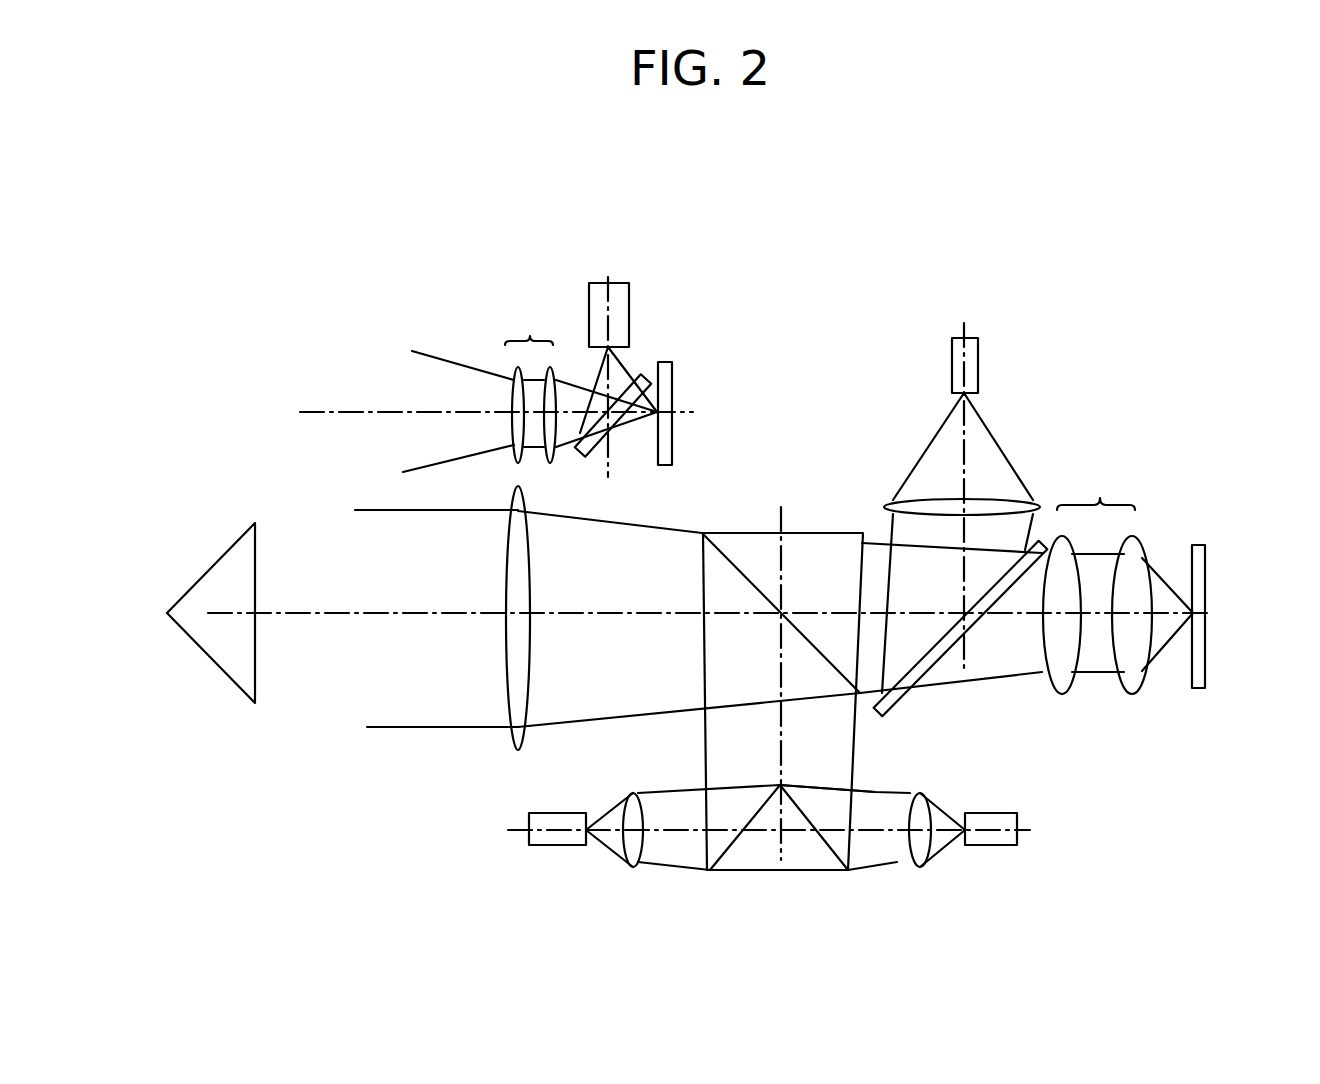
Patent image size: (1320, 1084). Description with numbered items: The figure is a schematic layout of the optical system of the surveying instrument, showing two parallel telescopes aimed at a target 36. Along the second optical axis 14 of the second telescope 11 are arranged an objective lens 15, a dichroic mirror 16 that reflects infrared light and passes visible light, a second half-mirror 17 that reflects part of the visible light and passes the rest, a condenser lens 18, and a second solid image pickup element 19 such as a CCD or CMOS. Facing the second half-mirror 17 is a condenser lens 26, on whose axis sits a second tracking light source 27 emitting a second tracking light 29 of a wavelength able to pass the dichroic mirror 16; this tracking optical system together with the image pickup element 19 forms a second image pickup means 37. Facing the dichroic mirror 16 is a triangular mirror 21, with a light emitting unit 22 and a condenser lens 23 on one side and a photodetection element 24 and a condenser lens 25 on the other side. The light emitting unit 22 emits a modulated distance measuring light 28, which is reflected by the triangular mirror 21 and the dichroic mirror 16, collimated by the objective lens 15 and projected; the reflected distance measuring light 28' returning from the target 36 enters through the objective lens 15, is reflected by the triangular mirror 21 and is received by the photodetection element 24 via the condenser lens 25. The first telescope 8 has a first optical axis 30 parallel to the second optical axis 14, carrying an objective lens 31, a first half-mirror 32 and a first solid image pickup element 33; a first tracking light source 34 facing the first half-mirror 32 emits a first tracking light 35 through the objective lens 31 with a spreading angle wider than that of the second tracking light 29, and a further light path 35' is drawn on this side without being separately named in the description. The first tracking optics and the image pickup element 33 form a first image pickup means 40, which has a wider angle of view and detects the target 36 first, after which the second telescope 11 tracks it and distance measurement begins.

The first telescope 8 is at (470, 322).
The second telescope 11 is at (817, 465).
The second optical axis 14 is at (370, 613).
The objective lens 15 is at (510, 500).
The dichroic mirror 16 is at (745, 533).
The second half-mirror 17 is at (1042, 540).
The condenser lens 18 is at (1100, 498).
The second solid image pickup element 19 is at (1198, 545).
The triangular mirror 21 is at (750, 873).
The light emitting unit 22 is at (1017, 812).
The condenser lens 23 is at (925, 797).
The photodetection element 24 is at (563, 847).
The condenser lens 25 is at (633, 790).
The condenser lens 26 is at (1033, 502).
The second tracking light source 27 is at (980, 350).
The distance measuring light 28 is at (860, 760).
The reflected distance measuring light 28' is at (393, 667).
The second tracking light 29 is at (925, 455).
The first optical axis 30 is at (330, 410).
The objective lens 31 is at (530, 336).
The first half-mirror 32 is at (643, 377).
The first solid image pickup element 33 is at (673, 387).
The first tracking light source 34 is at (589, 298).
The first tracking light 35 is at (584, 306).
The light beam 35' is at (436, 368).
The target 36 is at (240, 532).
The second image pickup means 37 is at (1165, 528).
The first image pickup means 40 is at (690, 340).